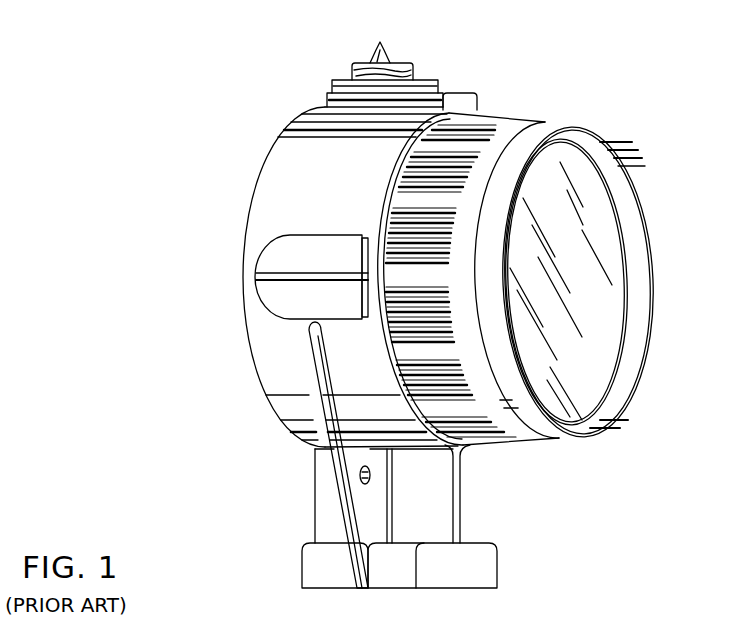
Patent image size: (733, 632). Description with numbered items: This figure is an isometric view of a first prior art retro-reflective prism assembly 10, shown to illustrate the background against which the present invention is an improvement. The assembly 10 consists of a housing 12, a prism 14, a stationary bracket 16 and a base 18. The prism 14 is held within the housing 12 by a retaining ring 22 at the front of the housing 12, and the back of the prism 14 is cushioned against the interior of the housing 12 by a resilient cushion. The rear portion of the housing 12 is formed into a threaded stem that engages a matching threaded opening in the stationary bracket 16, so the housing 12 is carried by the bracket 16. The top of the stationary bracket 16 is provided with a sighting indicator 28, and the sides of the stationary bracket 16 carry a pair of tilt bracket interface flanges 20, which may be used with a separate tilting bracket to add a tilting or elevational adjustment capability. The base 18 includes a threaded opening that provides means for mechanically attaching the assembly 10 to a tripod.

The retro-reflective prism assembly 10 is at (519, 74).
The housing 12 is at (512, 132).
The prism 14 is at (609, 222).
The stationary bracket 16 is at (282, 157).
The base 18 is at (318, 566).
The tilt bracket interface flanges 20 is at (273, 258).
The retaining ring 22 is at (623, 372).
The sighting indicator 28 is at (373, 53).